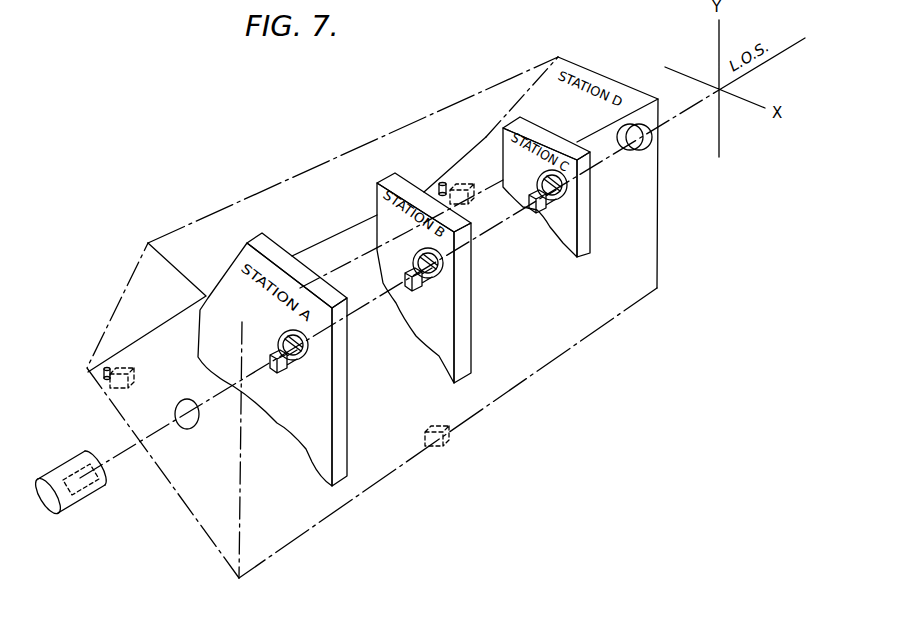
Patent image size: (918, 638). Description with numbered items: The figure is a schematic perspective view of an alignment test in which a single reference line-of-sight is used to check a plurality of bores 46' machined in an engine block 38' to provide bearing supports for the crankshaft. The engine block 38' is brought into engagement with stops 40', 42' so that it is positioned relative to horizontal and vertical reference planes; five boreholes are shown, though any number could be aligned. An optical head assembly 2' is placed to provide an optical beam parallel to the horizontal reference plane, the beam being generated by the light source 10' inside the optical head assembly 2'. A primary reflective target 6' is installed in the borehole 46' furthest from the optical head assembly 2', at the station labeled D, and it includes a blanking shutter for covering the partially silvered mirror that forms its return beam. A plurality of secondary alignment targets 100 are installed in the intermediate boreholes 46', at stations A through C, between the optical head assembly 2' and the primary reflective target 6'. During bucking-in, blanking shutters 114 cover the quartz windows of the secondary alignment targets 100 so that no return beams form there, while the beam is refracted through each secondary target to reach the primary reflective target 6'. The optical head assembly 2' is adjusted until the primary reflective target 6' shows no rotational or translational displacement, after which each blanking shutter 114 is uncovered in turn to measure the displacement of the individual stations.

The engine block 38' is at (372, 317).
The stop 40' is at (275, 291).
The stop 42' is at (240, 267).
The bore 46' is at (435, 276).
The primary reflective target 6' is at (627, 159).
The secondary alignment target 100 is at (290, 371).
The blanking shutter 114 is at (283, 348).
The light source 10' is at (108, 486).
The optical head assembly 2' is at (83, 501).